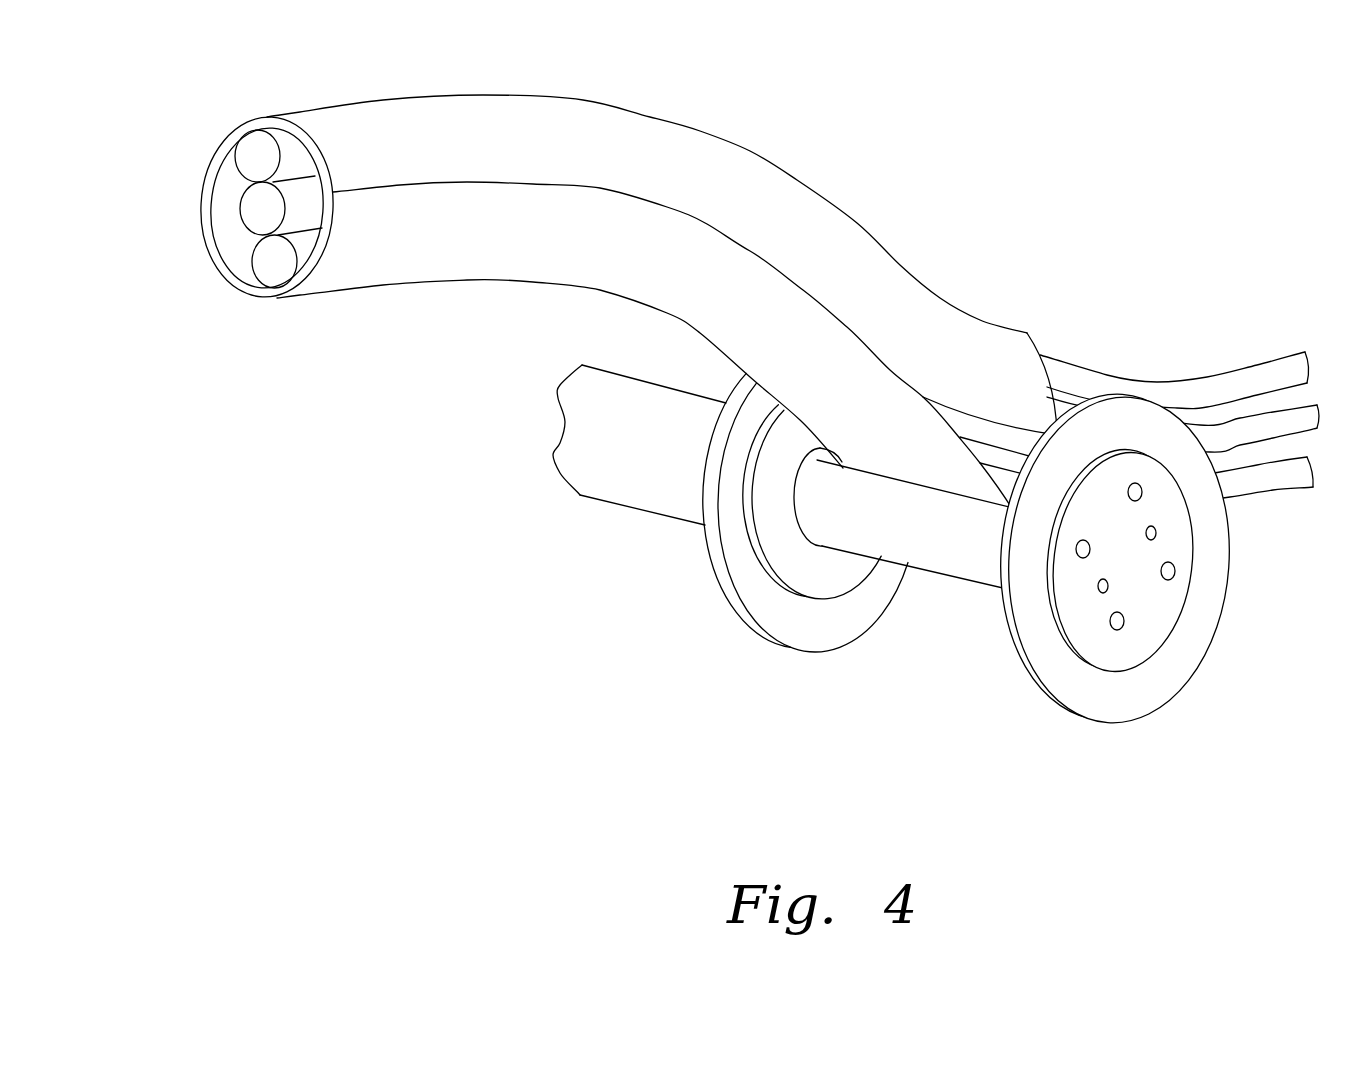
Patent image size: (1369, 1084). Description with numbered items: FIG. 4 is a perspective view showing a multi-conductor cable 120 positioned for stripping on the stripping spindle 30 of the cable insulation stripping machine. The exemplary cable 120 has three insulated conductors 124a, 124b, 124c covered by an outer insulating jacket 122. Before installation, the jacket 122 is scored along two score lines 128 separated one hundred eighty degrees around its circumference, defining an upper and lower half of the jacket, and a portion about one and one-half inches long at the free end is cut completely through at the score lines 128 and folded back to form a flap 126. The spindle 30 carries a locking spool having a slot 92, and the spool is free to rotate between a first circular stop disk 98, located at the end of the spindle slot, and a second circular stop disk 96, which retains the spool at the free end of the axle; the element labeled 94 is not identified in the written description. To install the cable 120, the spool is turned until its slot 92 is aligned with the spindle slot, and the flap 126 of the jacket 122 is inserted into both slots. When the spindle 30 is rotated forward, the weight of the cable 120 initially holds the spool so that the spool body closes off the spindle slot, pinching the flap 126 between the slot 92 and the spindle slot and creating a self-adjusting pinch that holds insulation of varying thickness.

The stripping spindle 30 is at (1291, 598).
The locking spool slot 92 is at (820, 455).
The barrel 94 is at (972, 557).
The second circular stop disk 96 is at (1167, 678).
The first circular stop disk 98 is at (830, 650).
The cable 120 is at (862, 211).
The outer insulating jacket 122 is at (532, 252).
The insulated conductor 124a is at (257, 153).
The insulated conductor 124b is at (262, 210).
The insulated conductor 124c is at (270, 265).
The flap 126 is at (815, 408).
The score lines 128 is at (803, 290).